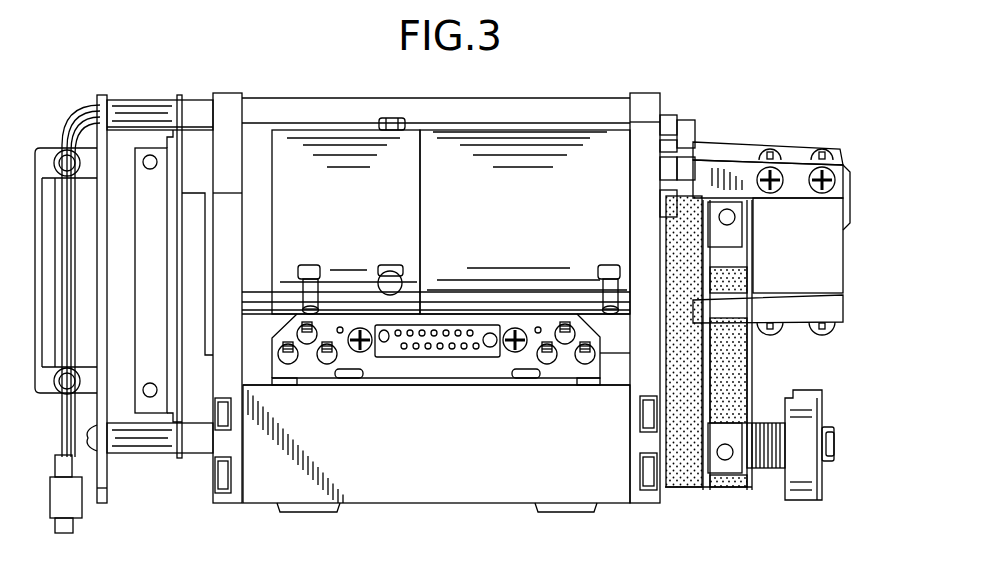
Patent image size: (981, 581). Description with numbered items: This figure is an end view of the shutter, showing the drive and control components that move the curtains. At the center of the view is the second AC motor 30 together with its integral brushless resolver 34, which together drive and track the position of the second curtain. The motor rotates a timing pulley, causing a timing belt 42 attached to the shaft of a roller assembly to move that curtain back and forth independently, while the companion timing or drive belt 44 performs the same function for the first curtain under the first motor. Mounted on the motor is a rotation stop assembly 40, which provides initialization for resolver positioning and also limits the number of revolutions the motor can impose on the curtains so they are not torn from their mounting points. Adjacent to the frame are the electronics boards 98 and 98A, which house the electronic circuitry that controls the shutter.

The second AC motor 30 is at (538, 155).
The integral brushless resolver 34 is at (358, 148).
The rotation stop assembly 40 is at (828, 272).
The timing belt 42 is at (684, 450).
The timing or drive belt 44 is at (730, 353).
The electronics board 98 is at (101, 99).
The electronics board 98A is at (168, 128).